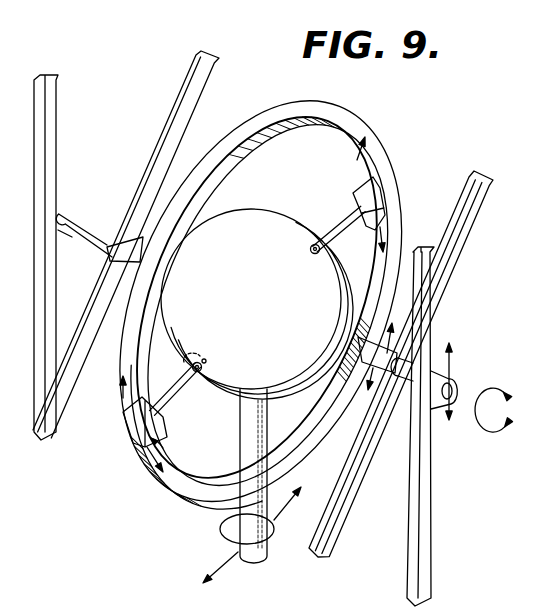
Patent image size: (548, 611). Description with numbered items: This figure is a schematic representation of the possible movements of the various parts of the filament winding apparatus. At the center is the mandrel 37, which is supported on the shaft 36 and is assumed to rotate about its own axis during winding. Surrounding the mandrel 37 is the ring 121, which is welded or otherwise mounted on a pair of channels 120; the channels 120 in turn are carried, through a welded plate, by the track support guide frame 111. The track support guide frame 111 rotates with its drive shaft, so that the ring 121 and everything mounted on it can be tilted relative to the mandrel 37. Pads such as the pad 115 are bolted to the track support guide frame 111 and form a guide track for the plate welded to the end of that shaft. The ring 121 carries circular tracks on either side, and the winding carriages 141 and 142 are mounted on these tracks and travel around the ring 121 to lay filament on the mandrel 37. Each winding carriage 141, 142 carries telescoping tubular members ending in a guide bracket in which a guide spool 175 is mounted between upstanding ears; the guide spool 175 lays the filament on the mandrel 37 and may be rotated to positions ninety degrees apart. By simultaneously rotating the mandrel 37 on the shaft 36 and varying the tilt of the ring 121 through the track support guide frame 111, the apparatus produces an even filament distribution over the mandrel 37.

The track support guide frame 111 is at (214, 60).
The pad 115 is at (469, 183).
The channels 120 is at (125, 243).
The ring 121 is at (348, 118).
The mandrel 37 is at (234, 227).
The shaft 36 is at (248, 442).
The winding carriage 141 is at (354, 199).
The winding carriage 142 is at (166, 420).
The guide spool 175 is at (311, 250).